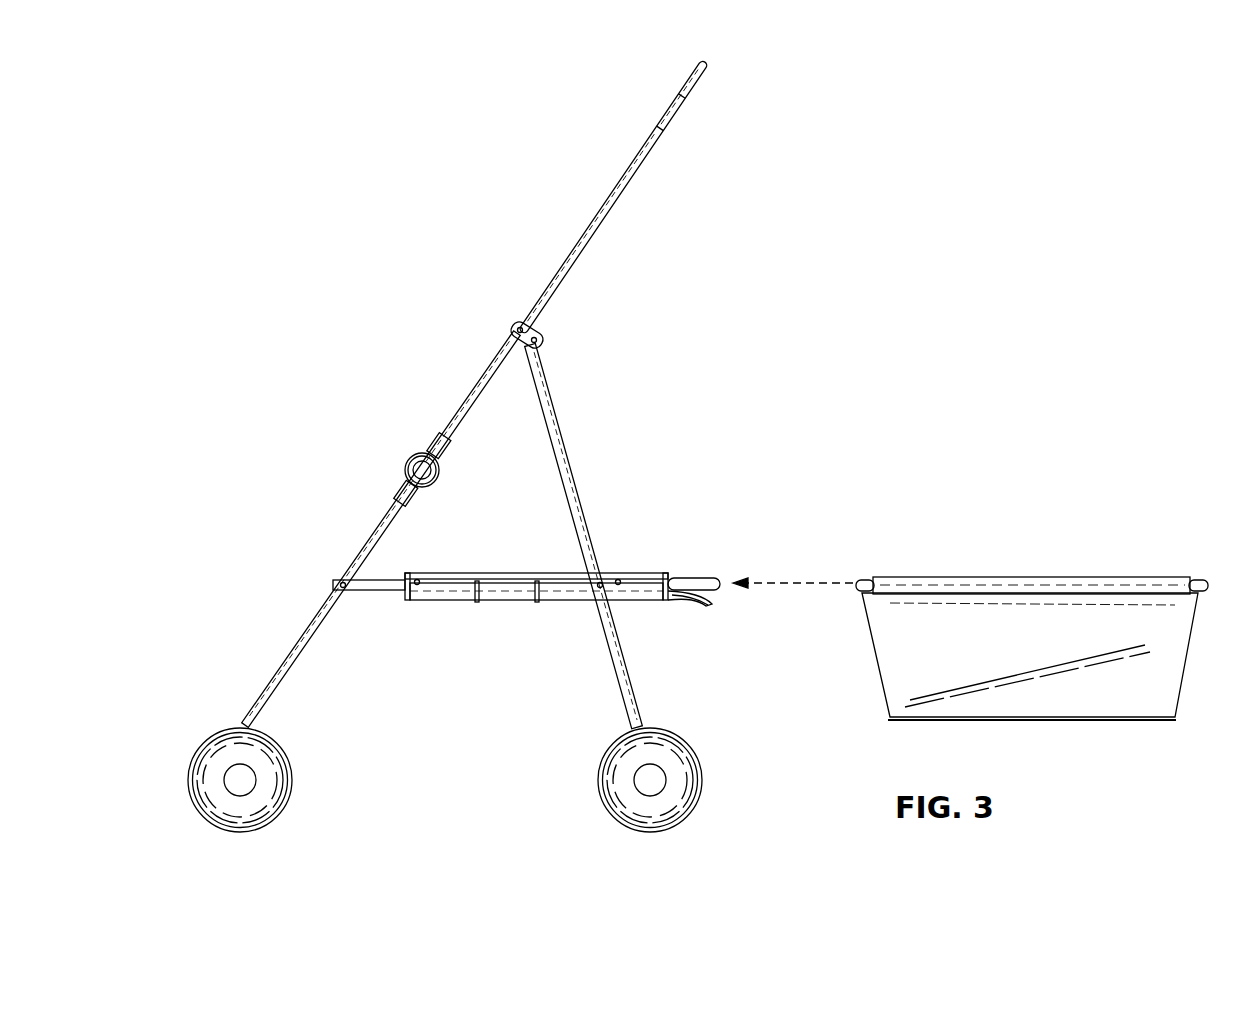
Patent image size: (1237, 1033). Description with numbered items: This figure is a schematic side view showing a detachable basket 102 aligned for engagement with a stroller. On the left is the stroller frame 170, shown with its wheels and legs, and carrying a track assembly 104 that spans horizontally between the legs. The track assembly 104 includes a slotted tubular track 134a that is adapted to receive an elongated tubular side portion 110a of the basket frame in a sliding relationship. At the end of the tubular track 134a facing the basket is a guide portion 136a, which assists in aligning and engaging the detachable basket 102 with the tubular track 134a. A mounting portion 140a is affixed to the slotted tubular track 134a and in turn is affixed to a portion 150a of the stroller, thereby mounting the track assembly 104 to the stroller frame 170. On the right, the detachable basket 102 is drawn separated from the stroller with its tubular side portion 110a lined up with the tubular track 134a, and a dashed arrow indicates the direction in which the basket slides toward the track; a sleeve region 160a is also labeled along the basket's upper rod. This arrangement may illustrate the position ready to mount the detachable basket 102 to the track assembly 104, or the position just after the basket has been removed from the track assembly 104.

The detachable basket 102 is at (1046, 566).
The track assembly 104 is at (672, 552).
The tubular side portion 110a is at (997, 576).
The tubular track 134a is at (507, 601).
The guide portion 136a is at (683, 604).
The mounting portion 140a is at (497, 574).
The portion of stroller 150a is at (373, 591).
The basket sleeve 160a is at (1090, 576).
The stroller frame 170 is at (633, 183).